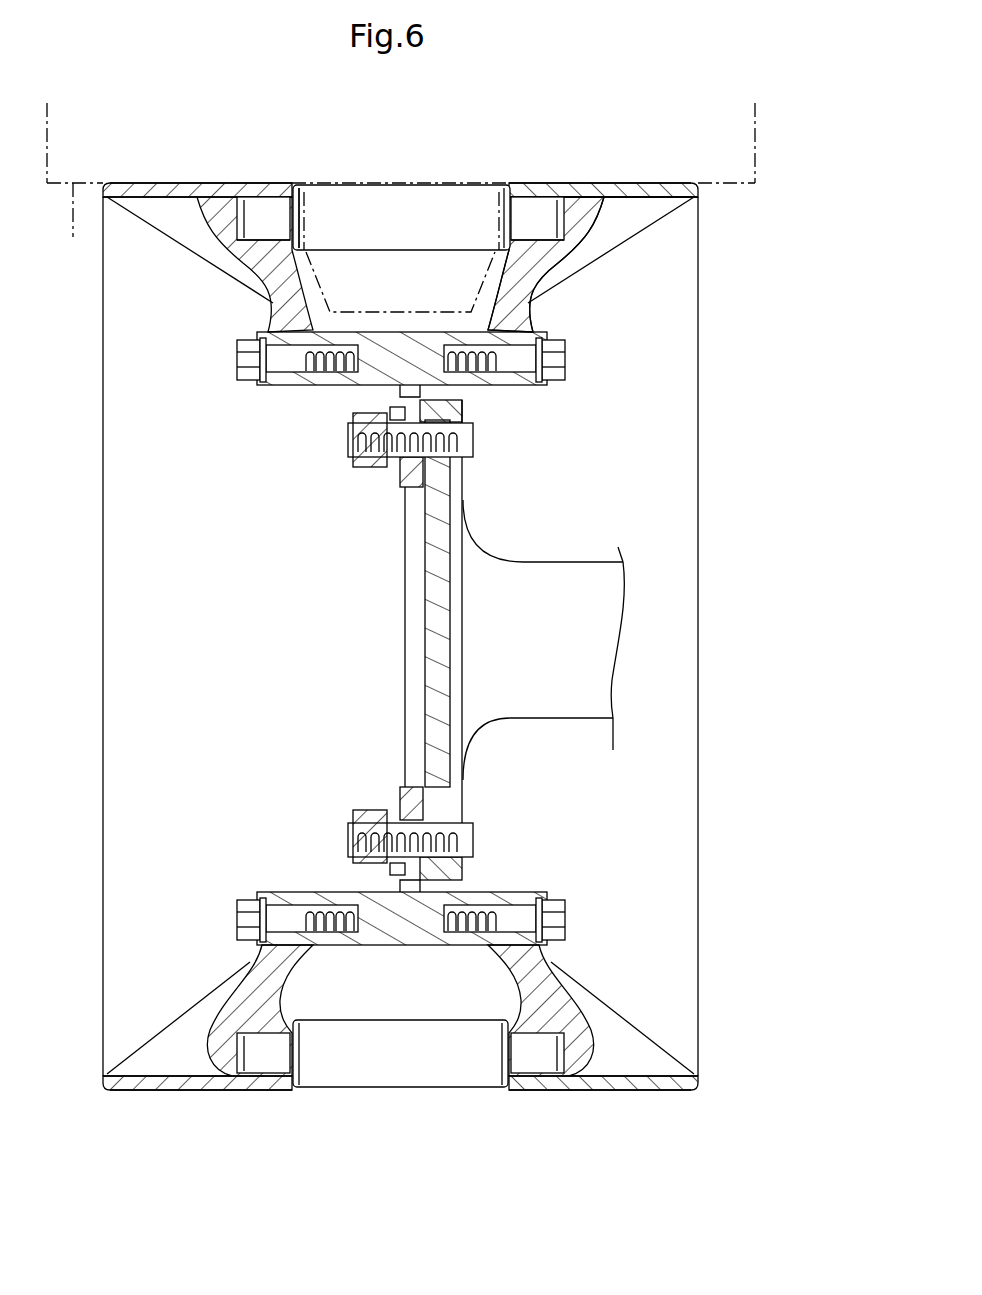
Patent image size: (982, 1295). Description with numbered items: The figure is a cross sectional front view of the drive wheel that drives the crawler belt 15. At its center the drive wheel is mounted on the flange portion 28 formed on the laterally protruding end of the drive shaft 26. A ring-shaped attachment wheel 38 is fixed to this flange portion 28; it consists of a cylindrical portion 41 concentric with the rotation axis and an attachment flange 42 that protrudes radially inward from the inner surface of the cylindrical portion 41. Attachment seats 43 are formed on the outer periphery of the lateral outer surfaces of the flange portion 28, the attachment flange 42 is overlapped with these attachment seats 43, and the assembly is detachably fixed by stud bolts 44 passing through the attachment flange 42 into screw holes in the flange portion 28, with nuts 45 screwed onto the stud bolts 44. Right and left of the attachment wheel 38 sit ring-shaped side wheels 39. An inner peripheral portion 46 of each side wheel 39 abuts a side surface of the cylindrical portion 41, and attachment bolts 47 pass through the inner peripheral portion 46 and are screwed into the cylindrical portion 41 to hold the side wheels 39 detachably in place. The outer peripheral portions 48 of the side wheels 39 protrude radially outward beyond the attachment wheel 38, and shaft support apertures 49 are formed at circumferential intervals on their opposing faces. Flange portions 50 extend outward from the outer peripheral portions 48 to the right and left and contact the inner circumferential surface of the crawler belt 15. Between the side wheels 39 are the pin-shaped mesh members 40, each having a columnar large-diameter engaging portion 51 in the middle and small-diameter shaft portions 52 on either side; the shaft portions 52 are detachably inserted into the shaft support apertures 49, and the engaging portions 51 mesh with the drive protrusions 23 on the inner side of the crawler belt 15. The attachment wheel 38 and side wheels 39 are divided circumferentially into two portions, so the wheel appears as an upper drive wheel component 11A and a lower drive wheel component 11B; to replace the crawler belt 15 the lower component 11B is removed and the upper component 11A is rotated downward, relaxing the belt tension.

The drive wheel component 11A is at (275, 443).
The drive wheel component 11B is at (279, 812).
The crawler belt 15 is at (73, 228).
The drive protrusion 23 is at (560, 297).
The drive shaft 26 is at (520, 580).
The flange portion 28 is at (450, 757).
The attachment wheel 38 is at (280, 531).
The side wheel 39 is at (545, 332).
The mesh member 40 is at (475, 1120).
The cylindrical portion 41 is at (350, 387).
The attachment flange 42 is at (400, 480).
The attachment seat 43 is at (467, 487).
The stud bolt 44 is at (470, 838).
The nut 45 is at (367, 810).
The inner peripheral portion 46 is at (517, 383).
The attachment bolt 47 is at (563, 363).
The outer peripheral portion 48 is at (597, 184).
The shaft support aperture 49 is at (513, 217).
The flange portion 50 is at (667, 187).
The engaging portion 51 is at (323, 193).
The shaft portion 52 is at (553, 223).